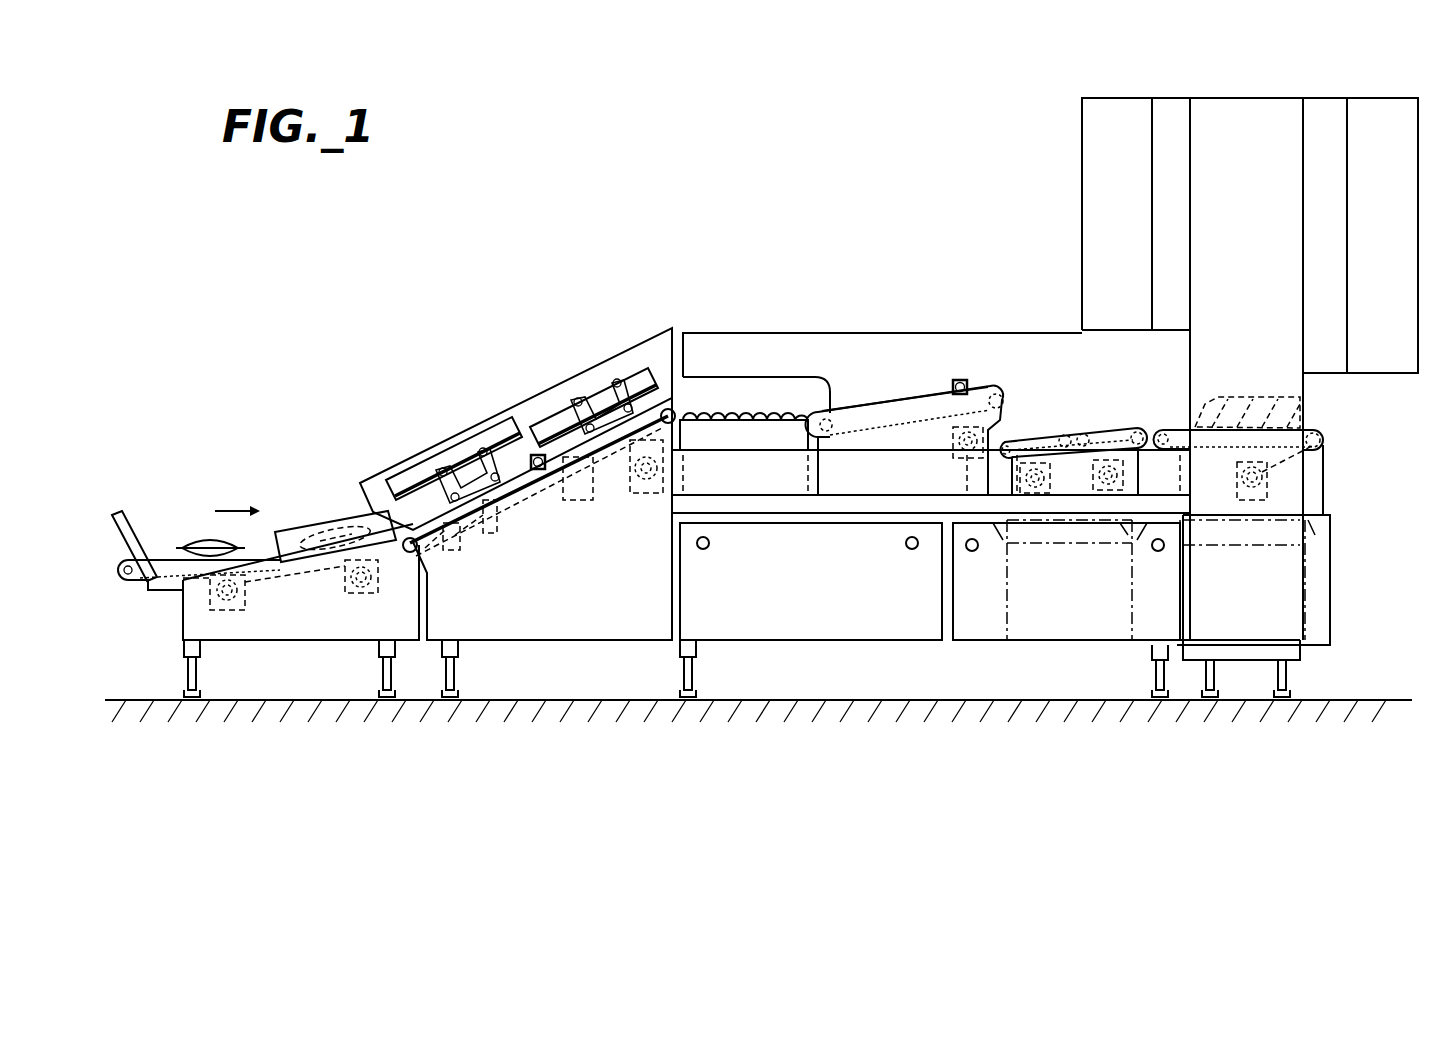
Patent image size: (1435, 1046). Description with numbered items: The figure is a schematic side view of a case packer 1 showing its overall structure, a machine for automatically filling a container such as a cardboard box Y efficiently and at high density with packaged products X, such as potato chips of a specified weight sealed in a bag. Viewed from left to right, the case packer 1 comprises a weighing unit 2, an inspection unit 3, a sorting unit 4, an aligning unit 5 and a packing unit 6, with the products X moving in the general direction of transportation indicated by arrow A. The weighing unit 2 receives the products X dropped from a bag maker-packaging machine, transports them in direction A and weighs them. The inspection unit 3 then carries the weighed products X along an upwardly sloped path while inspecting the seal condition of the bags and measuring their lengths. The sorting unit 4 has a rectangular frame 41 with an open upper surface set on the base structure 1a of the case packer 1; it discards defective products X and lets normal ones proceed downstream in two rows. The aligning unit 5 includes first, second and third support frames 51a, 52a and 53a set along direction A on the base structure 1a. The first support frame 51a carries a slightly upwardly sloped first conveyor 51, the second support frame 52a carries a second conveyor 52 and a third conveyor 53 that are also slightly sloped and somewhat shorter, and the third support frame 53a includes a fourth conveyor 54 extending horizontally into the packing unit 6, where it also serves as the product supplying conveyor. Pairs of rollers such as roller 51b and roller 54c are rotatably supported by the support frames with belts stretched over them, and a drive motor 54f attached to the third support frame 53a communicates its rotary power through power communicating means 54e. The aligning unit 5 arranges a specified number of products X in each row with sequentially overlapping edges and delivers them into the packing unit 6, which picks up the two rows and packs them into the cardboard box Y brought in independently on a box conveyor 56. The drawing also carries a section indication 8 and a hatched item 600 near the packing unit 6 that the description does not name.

The case packer 1 is at (575, 322).
The base structure 1a is at (890, 633).
The weighing unit 2 is at (265, 480).
The inspection unit 3 is at (508, 398).
The sorting unit 4 is at (722, 300).
The rectangular frame 41 is at (735, 430).
The aligning unit 5 is at (1025, 306).
The first conveyor 51 is at (950, 395).
The first support frame 51a is at (915, 410).
The roller 51b is at (830, 440).
The second conveyor 52 is at (1037, 435).
The second support frame 52a is at (1115, 432).
The third conveyor 53 is at (1127, 427).
The third support frame 53a is at (1320, 463).
The fourth conveyor 54 is at (1318, 432).
The roller 54c is at (1325, 441).
The power communicating means 54e is at (1290, 464).
The drive motor 54f is at (1242, 492).
The box conveyor 56 is at (1308, 638).
The packing unit 6 is at (1255, 85).
The packaging film / bag 600 is at (1215, 387).
The section line 8- 8 is at (1428, 93).
The packaged products X is at (212, 538).
The cardboard box Y is at (1290, 575).
The direction of transportation A is at (236, 500).